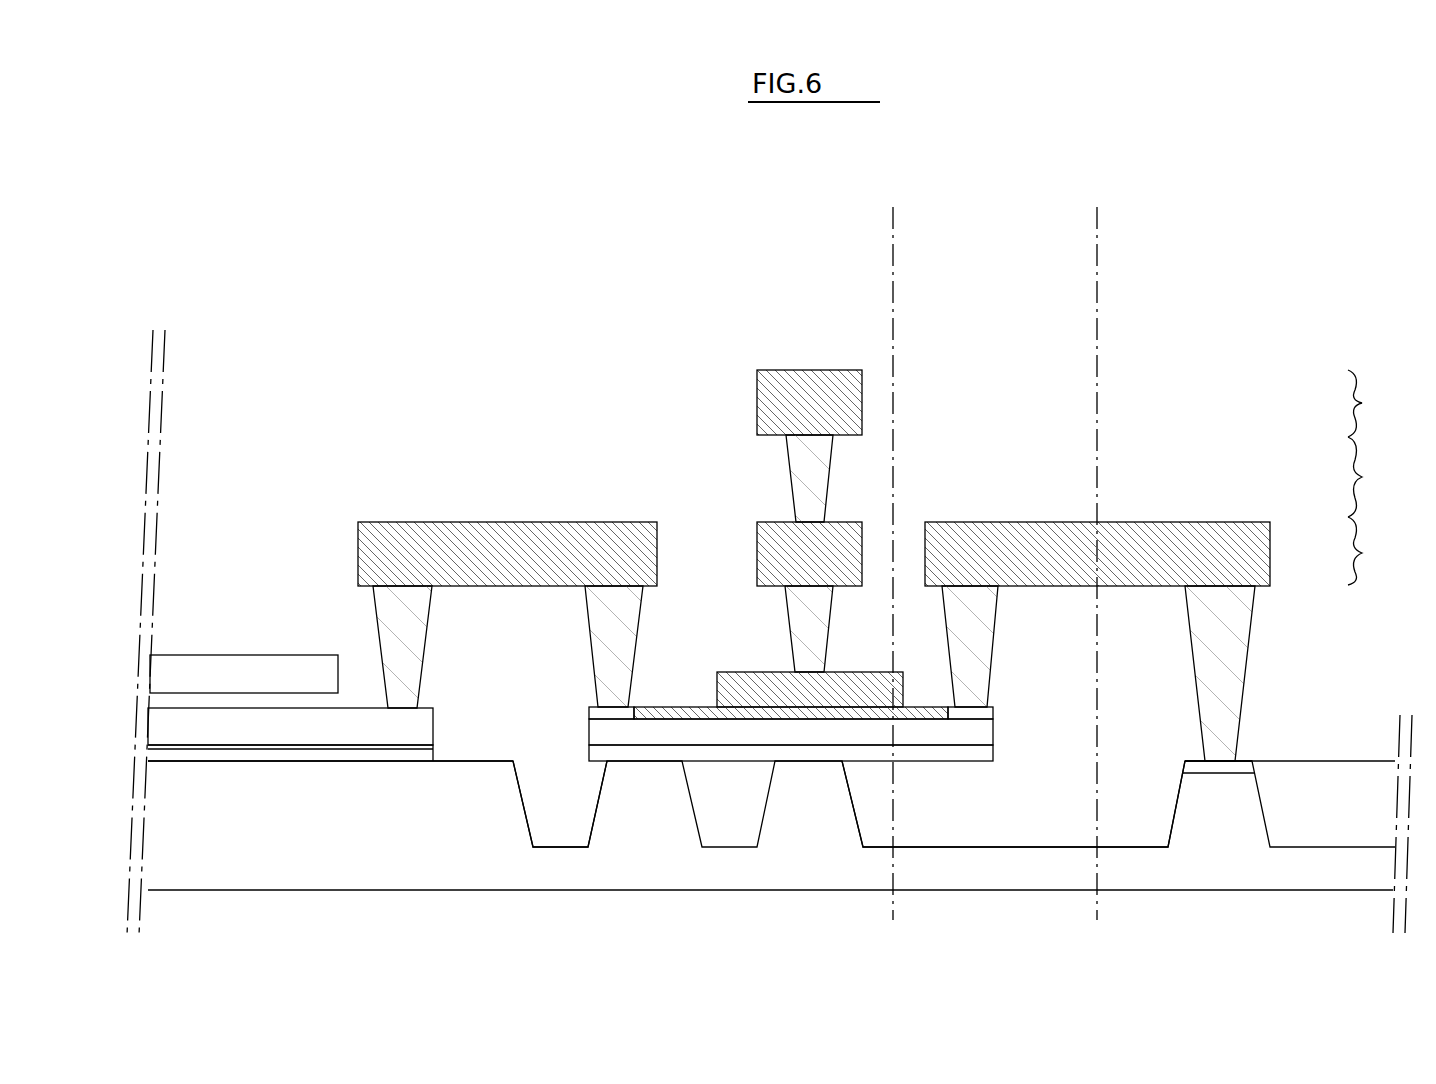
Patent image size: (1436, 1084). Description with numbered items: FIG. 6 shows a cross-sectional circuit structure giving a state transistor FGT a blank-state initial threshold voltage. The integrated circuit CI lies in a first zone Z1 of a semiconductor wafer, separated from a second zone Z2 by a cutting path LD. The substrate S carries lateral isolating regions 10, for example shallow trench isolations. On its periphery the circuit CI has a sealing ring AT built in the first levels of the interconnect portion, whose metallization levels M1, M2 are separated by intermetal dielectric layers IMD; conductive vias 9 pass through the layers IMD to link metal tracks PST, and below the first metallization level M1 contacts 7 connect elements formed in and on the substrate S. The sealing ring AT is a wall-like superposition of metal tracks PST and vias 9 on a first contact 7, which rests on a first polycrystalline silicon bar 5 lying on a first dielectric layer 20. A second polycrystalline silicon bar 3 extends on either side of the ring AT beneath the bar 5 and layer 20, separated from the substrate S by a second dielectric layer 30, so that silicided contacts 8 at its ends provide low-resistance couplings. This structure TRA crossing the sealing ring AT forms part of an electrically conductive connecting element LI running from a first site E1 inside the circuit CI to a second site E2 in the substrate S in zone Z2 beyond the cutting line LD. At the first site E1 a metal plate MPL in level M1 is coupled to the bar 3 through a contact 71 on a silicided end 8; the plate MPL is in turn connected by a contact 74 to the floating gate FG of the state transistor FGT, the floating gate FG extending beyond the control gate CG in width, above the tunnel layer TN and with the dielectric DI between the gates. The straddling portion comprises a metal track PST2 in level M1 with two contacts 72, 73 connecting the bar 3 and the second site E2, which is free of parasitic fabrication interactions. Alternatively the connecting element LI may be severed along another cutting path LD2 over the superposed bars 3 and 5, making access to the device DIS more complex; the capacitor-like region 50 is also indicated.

The second polycrystalline silicon bar 3 is at (988, 733).
The first polycrystalline silicon bar 5 is at (724, 690).
The contact 7 is at (794, 629).
The contact 8 is at (590, 708).
The conductive via 9 is at (792, 481).
The lateral isolating region 10 is at (560, 830).
The first dielectric layer 20 is at (664, 714).
The second dielectric layer 30 is at (988, 758).
The capacitor 50 is at (853, 652).
The contact 71 is at (590, 628).
The contact 72 is at (990, 640).
The contact 73 is at (1194, 662).
The contact 74 is at (411, 633).
The substrate S is at (771, 825).
The structure crossing the sealing ring TRA is at (809, 776).
The state transistor FGT is at (257, 776).
The floating gate FG is at (428, 725).
The control gate CG is at (262, 668).
The tunnel oxide TN is at (428, 753).
The dielectric DI is at (333, 700).
The device DIS is at (260, 441).
The integrated circuit CI is at (358, 478).
The metal plate MPL is at (512, 520).
The metal track PST is at (855, 372).
The metal track PST2 is at (1161, 530).
The electrically conductive connecting element LI is at (1041, 434).
The sealing ring AT is at (745, 602).
The first site E1 is at (589, 690).
The second site E2 is at (1236, 759).
The first metallization level M1 is at (1378, 551).
The second metallization level M2 is at (1378, 403).
The intermetal dielectric layer IMD is at (1384, 477).
The first zone Z1 is at (1097, 273).
The second zone Z2 is at (1433, 273).
The cutting path LD is at (1094, 219).
The other cutting path LD2 is at (890, 219).